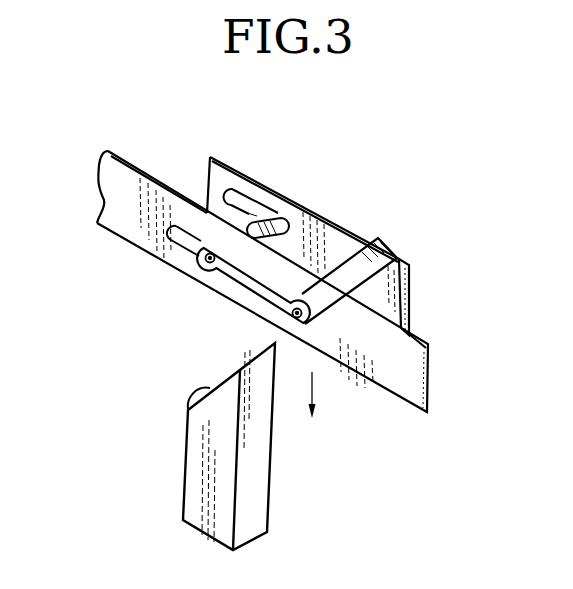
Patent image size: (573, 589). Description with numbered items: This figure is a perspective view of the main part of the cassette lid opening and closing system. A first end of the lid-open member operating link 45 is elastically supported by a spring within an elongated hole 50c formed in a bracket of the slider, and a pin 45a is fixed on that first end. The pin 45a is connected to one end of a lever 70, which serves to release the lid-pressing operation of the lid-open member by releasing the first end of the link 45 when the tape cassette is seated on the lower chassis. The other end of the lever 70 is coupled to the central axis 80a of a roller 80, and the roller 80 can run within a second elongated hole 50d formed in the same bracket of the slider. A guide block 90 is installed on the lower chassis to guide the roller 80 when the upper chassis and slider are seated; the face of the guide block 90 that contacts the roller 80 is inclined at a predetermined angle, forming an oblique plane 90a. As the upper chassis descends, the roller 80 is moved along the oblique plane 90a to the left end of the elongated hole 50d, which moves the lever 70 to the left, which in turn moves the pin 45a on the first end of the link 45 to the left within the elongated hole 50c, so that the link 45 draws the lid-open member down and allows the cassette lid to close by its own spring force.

The lid-open member operating link 45 is at (378, 236).
The pin 45a is at (300, 325).
The elongated hole 50c is at (238, 358).
The elongated hole 50d is at (168, 229).
The lever 70 is at (232, 290).
The roller 80 is at (258, 216).
The central axis of roller 80a is at (202, 267).
The guide block 90 is at (270, 489).
The oblique plane 90a is at (193, 400).